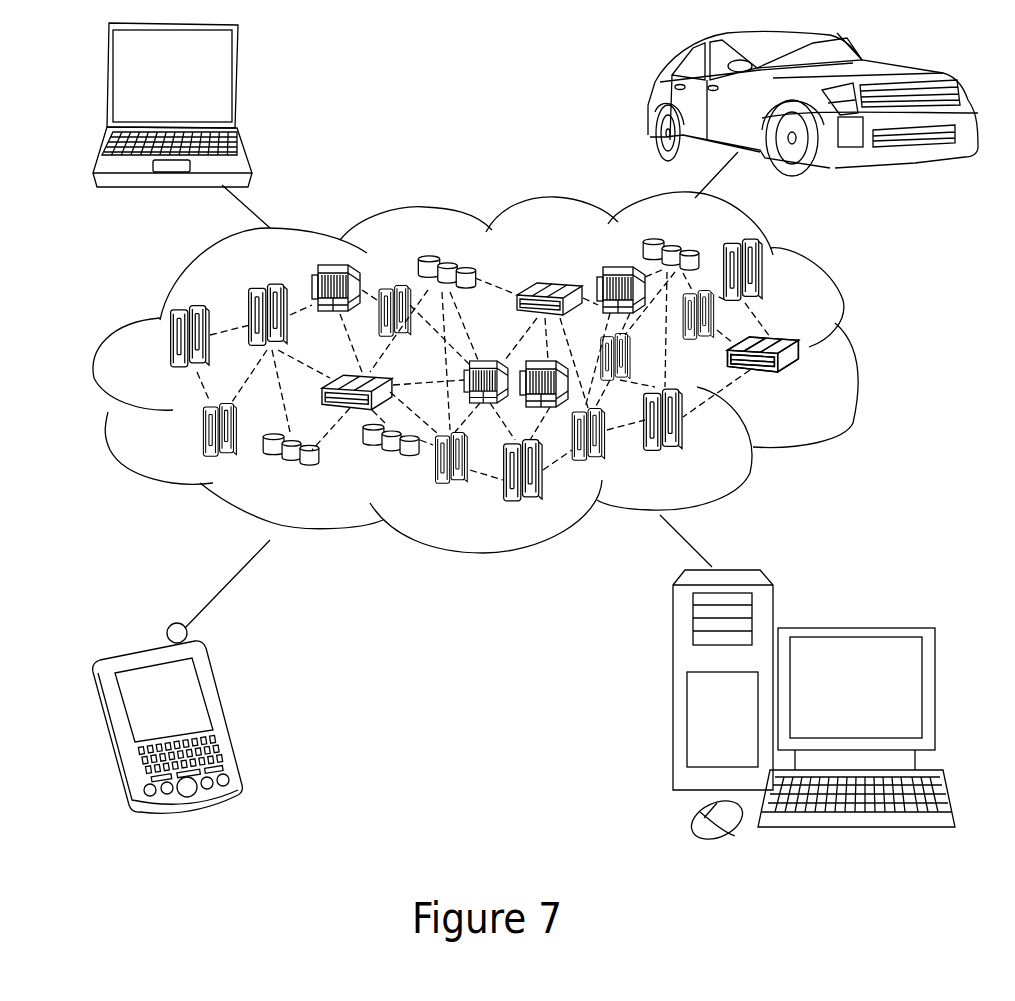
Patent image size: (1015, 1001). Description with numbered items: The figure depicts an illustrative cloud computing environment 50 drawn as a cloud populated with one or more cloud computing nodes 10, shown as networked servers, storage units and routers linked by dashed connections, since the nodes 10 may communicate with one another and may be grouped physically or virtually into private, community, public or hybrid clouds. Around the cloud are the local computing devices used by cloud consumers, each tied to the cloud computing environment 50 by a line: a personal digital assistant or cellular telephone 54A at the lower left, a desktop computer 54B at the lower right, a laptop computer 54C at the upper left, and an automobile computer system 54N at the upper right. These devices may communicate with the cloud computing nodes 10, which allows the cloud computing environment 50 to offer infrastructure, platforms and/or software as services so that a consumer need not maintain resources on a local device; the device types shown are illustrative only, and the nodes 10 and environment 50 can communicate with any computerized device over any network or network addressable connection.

The cloud computing node 10 is at (802, 380).
The cloud computing environment 50 is at (858, 351).
The personal digital assistant or cellular telephone 54A is at (223, 710).
The desktop computer 54B is at (855, 628).
The laptop computer 54C is at (237, 85).
The automobile computer system 54N is at (648, 102).